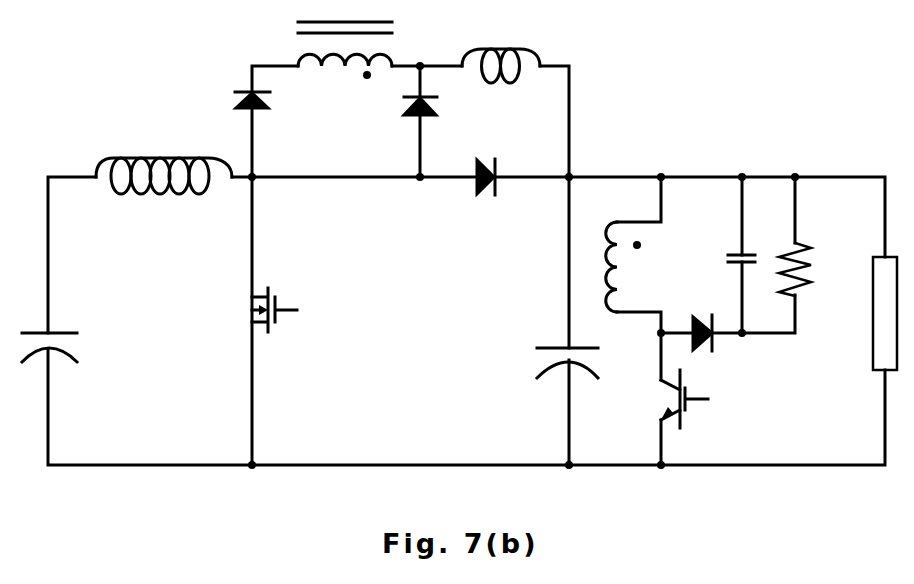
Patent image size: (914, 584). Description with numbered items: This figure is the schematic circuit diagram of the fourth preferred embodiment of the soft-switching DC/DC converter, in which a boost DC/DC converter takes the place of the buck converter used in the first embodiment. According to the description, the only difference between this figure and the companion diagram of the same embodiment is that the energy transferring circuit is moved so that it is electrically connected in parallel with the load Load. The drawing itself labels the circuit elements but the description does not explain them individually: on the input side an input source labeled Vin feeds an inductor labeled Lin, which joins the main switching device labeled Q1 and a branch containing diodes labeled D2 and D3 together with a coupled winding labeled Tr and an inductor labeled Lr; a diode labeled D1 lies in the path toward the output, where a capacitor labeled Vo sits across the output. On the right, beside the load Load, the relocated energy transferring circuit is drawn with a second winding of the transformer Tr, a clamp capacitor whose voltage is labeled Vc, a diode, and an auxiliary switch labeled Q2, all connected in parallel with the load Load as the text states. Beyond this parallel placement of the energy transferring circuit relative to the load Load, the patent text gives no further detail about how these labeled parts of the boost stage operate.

The input voltage source capacitor Vin is at (45, 330).
The input inductor Lin is at (164, 161).
The diode D2 is at (235, 101).
The diode D3 is at (391, 115).
The coupled transformer winding Tr is at (469, 178).
The resonant inductor Lr is at (501, 50).
The output diode D1 is at (495, 193).
The main switch MOSFET Q1 is at (291, 310).
The output capacitor voltage Vo is at (551, 359).
The clamp capacitor voltage Vc is at (726, 273).
The auxiliary switch IGBT Q2 is at (703, 399).
The load Load is at (866, 329).